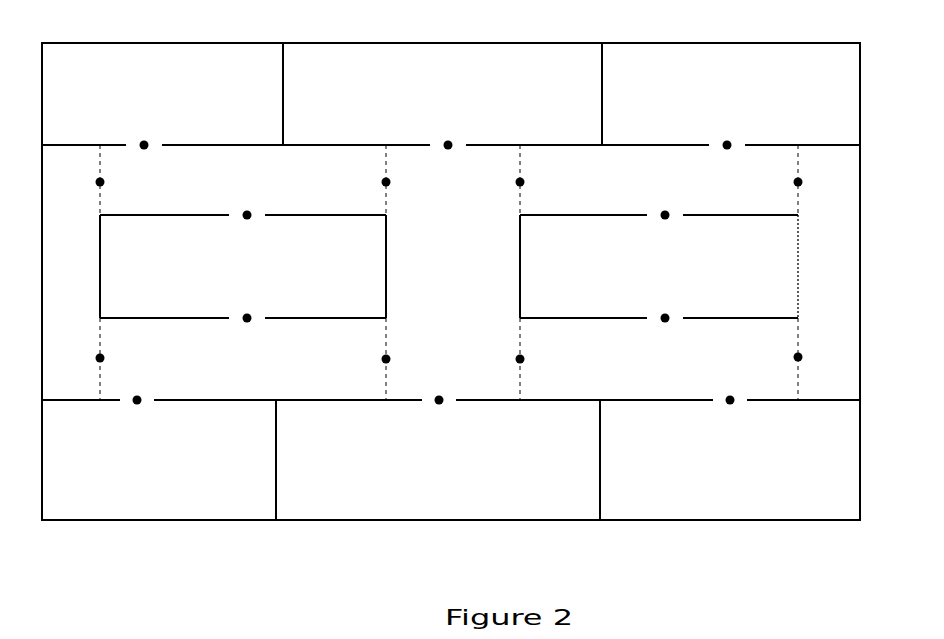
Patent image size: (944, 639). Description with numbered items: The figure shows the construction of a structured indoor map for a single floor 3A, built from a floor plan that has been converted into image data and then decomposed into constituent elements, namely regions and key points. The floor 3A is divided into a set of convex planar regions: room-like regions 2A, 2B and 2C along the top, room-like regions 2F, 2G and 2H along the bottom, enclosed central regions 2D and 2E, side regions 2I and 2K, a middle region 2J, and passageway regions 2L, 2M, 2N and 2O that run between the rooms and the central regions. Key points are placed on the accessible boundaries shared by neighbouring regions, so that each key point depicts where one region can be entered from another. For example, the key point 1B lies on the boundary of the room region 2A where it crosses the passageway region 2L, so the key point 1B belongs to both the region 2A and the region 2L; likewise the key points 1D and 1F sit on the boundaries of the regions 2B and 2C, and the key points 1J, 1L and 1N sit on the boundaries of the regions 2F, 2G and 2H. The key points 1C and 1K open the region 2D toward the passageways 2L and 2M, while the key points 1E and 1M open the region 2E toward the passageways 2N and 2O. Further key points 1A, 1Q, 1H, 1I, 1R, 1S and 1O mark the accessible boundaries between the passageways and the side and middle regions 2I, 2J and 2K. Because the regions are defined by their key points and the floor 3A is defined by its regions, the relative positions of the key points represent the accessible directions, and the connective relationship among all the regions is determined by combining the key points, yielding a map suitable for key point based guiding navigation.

The connection point 1A is at (243, 194).
The key point 1B is at (144, 158).
The connection point 1C is at (247, 231).
The connection point 1D is at (447, 158).
The connection point 1E is at (664, 231).
The connection point 1F is at (727, 158).
The connection point 1H is at (798, 194).
The connection point 1I is at (95, 372).
The connection point 1J is at (137, 414).
The connection point 1K is at (247, 332).
The connection point 1L is at (439, 414).
The connection point 1M is at (665, 330).
The connection point 1N is at (730, 415).
The connection point 1O is at (799, 373).
The connection point 1Q is at (519, 194).
The connection point 1R is at (377, 374).
The connection point 1S is at (519, 376).
The region 2A is at (162, 94).
The panel segment 2B is at (442, 94).
The panel segment 2C is at (731, 114).
The panel segment 2D is at (243, 266).
The panel segment 2E is at (659, 266).
The panel segment 2F is at (159, 460).
The panel segment 2G is at (438, 460).
The panel segment 2H is at (730, 437).
The panel segment 2I is at (58, 272).
The panel segment 2J is at (453, 272).
The panel segment 2K is at (839, 272).
The region 2L is at (177, 180).
The panel segment 2M is at (179, 359).
The panel segment 2N is at (723, 180).
The panel segment 2O is at (722, 359).
The floor 3A is at (560, 520).